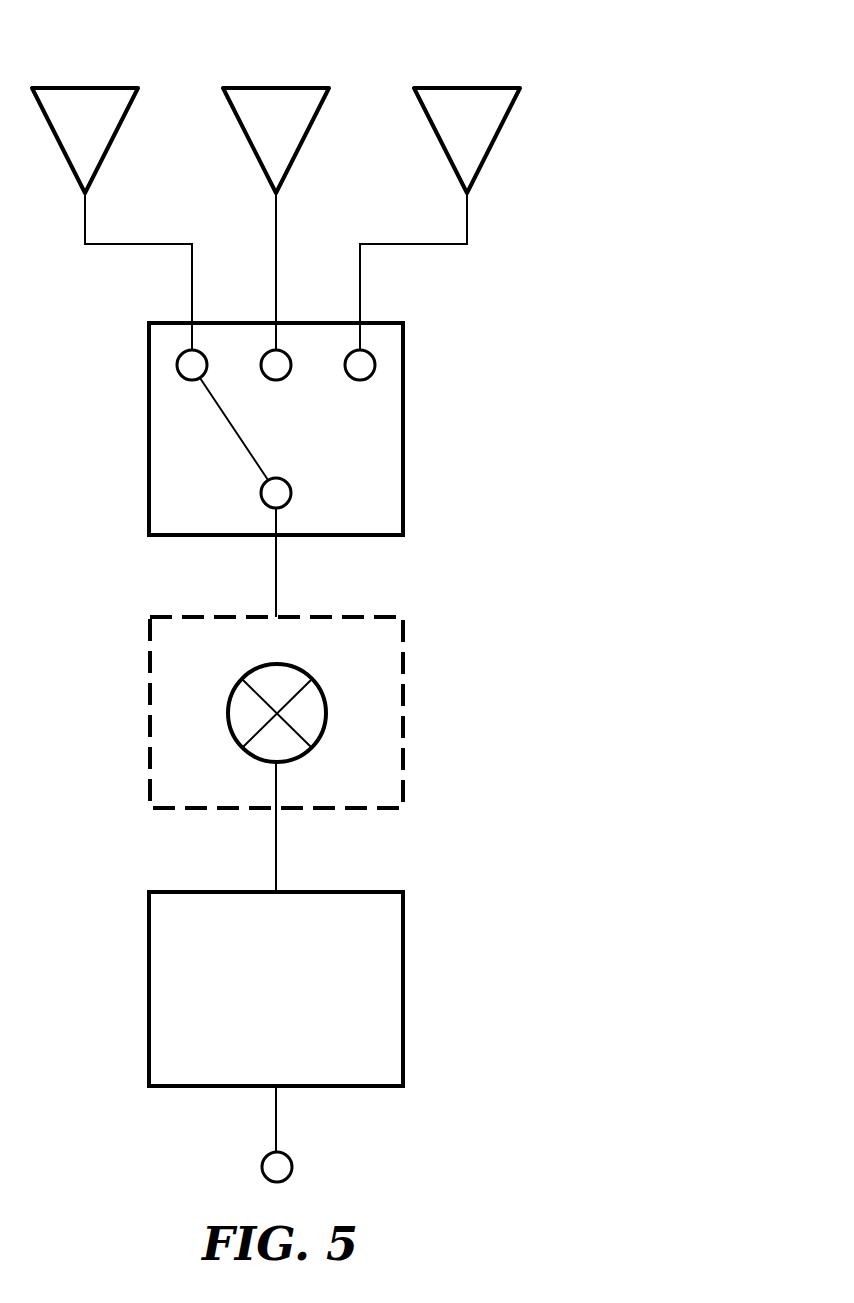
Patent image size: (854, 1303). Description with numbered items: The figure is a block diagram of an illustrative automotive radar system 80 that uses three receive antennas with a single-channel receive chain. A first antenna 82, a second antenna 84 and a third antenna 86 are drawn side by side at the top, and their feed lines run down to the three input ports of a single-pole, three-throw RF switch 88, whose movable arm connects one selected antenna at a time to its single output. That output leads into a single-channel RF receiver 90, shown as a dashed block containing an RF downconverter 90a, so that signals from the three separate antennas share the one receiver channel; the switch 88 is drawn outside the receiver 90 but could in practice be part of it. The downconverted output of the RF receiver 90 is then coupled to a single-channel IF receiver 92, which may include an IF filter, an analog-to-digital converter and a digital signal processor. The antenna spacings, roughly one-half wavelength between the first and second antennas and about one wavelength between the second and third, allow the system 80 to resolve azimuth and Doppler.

The radar system 80 is at (402, 46).
The first antenna 82 is at (70, 130).
The second antenna 84 is at (261, 130).
The third antenna 86 is at (452, 130).
The RF switch 88 is at (355, 516).
The RF receiver 90 is at (354, 791).
The RF downconverter 90a is at (300, 666).
The IF receiver 92 is at (353, 1068).